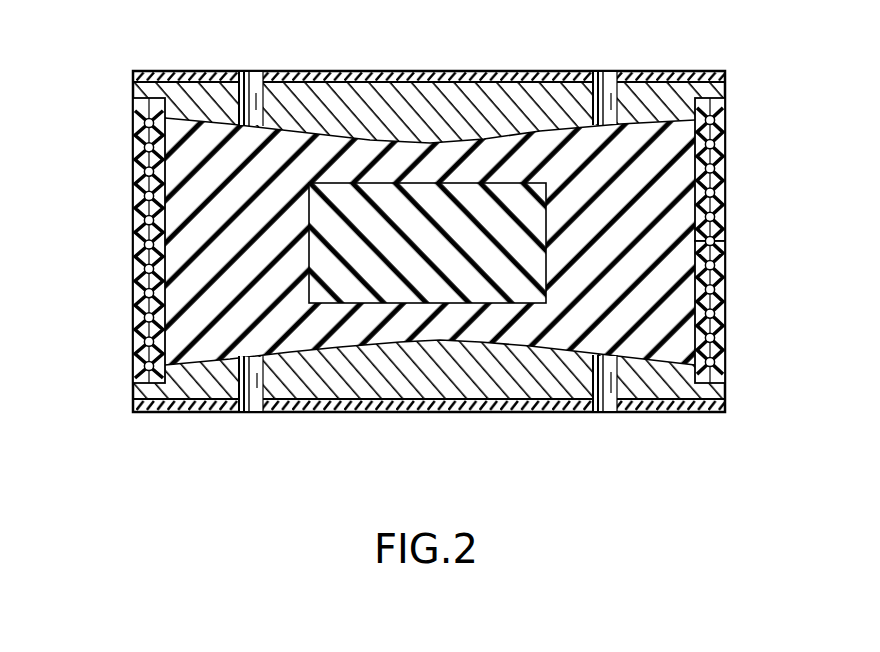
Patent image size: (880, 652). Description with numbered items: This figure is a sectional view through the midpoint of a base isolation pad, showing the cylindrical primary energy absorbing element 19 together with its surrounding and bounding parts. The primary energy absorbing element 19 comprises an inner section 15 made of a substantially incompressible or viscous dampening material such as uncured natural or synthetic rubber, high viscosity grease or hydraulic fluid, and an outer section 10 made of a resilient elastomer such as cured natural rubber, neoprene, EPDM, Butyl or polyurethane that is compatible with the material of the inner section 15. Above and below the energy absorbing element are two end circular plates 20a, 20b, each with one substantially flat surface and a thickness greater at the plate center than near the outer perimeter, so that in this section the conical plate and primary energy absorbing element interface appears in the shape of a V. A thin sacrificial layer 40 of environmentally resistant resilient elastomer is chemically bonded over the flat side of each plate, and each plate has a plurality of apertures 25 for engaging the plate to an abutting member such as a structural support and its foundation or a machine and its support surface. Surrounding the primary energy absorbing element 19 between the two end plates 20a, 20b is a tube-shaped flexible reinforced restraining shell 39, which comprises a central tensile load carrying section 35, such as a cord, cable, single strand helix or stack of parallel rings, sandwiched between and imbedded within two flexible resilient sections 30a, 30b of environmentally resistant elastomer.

The section 10 is at (214, 343).
The inner section 15 is at (388, 283).
The primary energy absorbing element 19 is at (148, 254).
The end circular plate 20a is at (557, 82).
The end circular plate 20b is at (558, 390).
The apertures 25 is at (252, 78).
The flexible resilient section 30a is at (720, 142).
The flexible resilient section 30b is at (703, 228).
The central tensile load carrying section 35 is at (715, 171).
The flexible reinforced restraining shell 39 is at (128, 177).
The sacrificial layer 40 is at (400, 80).